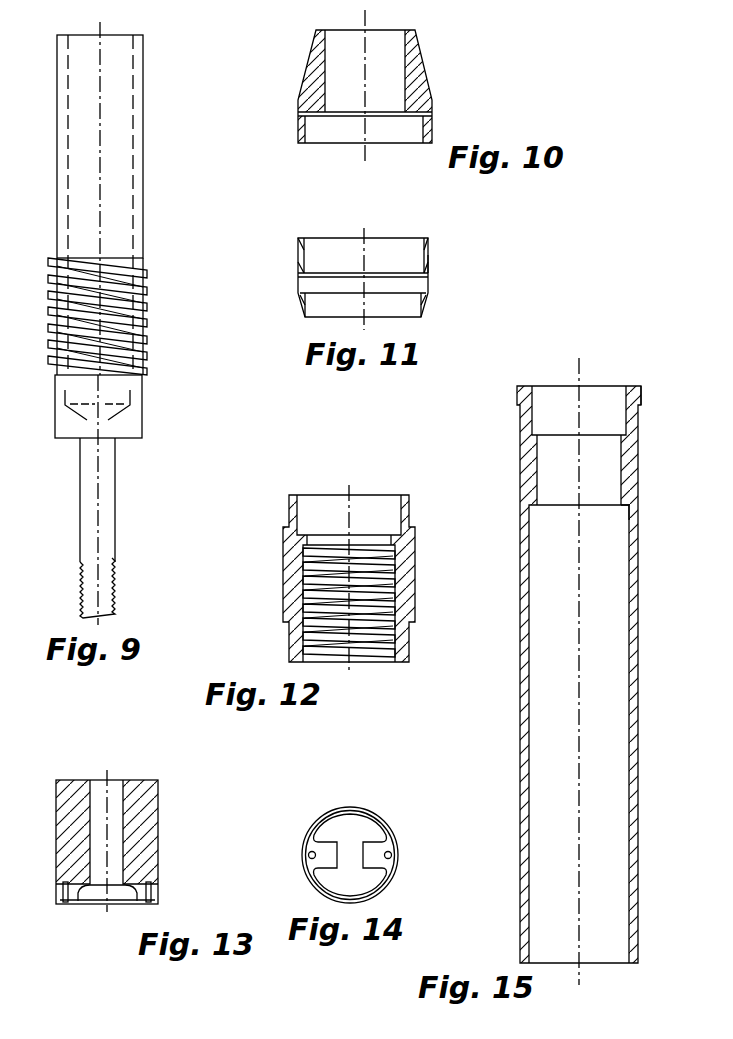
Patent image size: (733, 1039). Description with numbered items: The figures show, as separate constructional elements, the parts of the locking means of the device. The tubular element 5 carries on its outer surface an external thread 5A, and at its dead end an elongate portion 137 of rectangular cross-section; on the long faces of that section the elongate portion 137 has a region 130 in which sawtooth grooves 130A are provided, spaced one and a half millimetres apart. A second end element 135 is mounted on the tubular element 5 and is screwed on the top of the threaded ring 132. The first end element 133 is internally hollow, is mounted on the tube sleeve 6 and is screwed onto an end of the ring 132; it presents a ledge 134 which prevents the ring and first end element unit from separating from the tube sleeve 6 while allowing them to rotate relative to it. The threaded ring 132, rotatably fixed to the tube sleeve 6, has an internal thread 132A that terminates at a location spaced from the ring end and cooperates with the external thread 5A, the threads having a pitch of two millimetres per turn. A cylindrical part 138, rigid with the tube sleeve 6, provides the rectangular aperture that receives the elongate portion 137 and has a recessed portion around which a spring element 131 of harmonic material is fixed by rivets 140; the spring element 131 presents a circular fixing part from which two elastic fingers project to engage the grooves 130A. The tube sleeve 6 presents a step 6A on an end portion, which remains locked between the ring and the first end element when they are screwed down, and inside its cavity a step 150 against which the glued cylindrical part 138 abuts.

In FIG. 9, the tubular element 5 is at (120, 127).
In FIG. 9, the external thread 5A is at (146, 272).
In FIG. 9, the elongate portion 137 is at (105, 503).
In FIG. 9, the region 130 is at (68, 564).
In FIG. 9, the sawtooth grooves 130A is at (113, 593).
In FIG. 10, the second end element 135 is at (413, 72).
In FIG. 11, the first end element 133 is at (428, 258).
In FIG. 11, the ledge 134 is at (300, 296).
In FIG. 12, the threaded ring 132 is at (412, 558).
In FIG. 12, the internal thread 132A is at (372, 640).
In FIG. 13, the cylindrical part 138 is at (137, 797).
In FIG. 13, the spring element 131 is at (85, 905).
In FIG. 14, the spring element 131 is at (391, 843).
In FIG. 13, the rivets 140 is at (156, 897).
In FIG. 14, the rivets 140 is at (308, 852).
In FIG. 15, the tube sleeve 6 is at (521, 470).
In FIG. 15, the step 6A is at (641, 398).
In FIG. 15, the step 150 is at (626, 532).